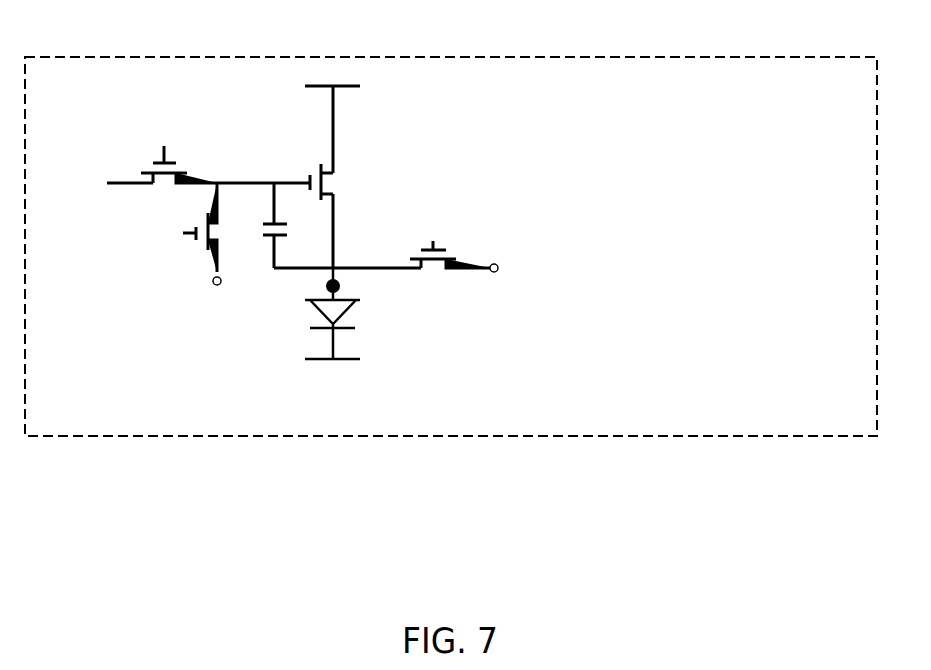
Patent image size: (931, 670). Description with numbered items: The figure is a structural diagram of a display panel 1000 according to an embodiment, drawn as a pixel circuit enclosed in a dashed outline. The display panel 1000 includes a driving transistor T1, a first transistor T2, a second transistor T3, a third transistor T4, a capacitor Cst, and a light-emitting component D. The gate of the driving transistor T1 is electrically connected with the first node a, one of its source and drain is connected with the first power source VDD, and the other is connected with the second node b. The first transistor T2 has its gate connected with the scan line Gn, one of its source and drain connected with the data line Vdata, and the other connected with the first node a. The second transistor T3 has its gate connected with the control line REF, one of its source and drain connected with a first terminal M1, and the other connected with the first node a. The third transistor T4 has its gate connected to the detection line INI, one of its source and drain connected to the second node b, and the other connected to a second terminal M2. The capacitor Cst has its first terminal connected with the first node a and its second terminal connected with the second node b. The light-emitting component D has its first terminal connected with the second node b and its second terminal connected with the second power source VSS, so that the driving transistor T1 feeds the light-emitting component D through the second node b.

The display panel 1000 is at (455, 57).
The driving transistor T1 is at (343, 182).
The first transistor T2 is at (179, 189).
The second transistor T3 is at (225, 227).
The third transistor T4 is at (450, 277).
The capacitor Cst is at (294, 246).
The light-emitting component D is at (318, 313).
The first power source VDD is at (332, 117).
The second power source VSS is at (332, 377).
The data line Vdata is at (93, 182).
The scan line Gn is at (163, 143).
The control line REF is at (168, 234).
The detection line INI is at (432, 235).
The first terminal M1 is at (218, 297).
The second terminal M2 is at (496, 285).
The first node a is at (263, 193).
The second node b is at (347, 231).